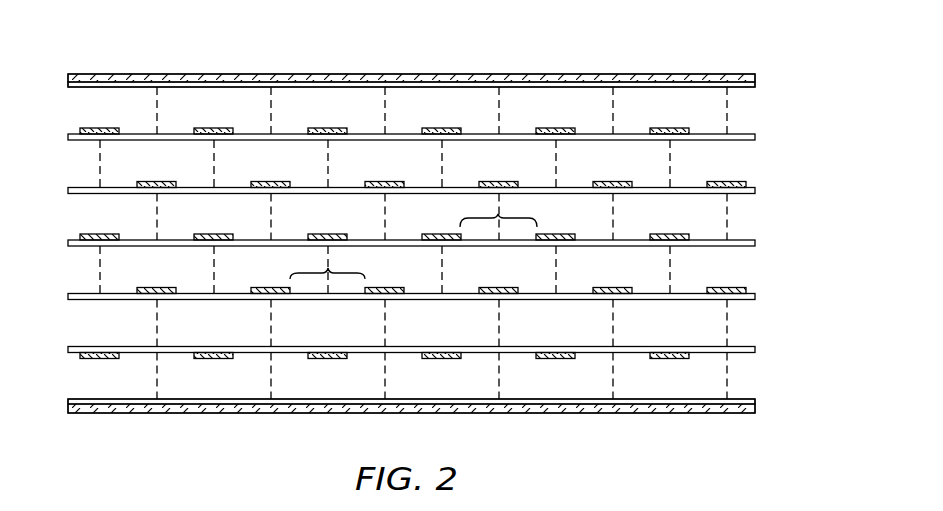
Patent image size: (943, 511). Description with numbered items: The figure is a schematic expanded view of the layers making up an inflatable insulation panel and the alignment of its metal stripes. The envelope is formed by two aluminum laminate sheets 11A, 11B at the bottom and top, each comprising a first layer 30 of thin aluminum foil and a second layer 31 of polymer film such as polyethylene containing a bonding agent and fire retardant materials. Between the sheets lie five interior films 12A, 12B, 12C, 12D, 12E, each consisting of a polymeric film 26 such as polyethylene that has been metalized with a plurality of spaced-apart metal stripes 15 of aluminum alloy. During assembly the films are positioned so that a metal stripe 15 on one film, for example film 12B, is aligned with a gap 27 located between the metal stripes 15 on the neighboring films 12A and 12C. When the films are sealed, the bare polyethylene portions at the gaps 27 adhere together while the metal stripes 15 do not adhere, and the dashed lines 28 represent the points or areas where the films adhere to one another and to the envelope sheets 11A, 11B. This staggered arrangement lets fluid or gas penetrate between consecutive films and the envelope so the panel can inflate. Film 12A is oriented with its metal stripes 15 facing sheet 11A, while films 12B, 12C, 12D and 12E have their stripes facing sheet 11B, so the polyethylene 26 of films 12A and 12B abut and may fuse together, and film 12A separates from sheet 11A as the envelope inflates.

The aluminum sheet 11A is at (634, 418).
The aluminum sheet 11B is at (634, 63).
The interior film 12A is at (738, 352).
The interior film 12B is at (738, 300).
The interior film 12C is at (423, 241).
The interior film 12D is at (738, 194).
The interior film 12E is at (738, 134).
The metal stripe 15 is at (100, 234).
The polymeric film 26 is at (88, 246).
The gap 27 is at (498, 214).
The dashed line 28 is at (157, 107).
The first layer 30 is at (87, 75).
The second layer 31 is at (87, 88).